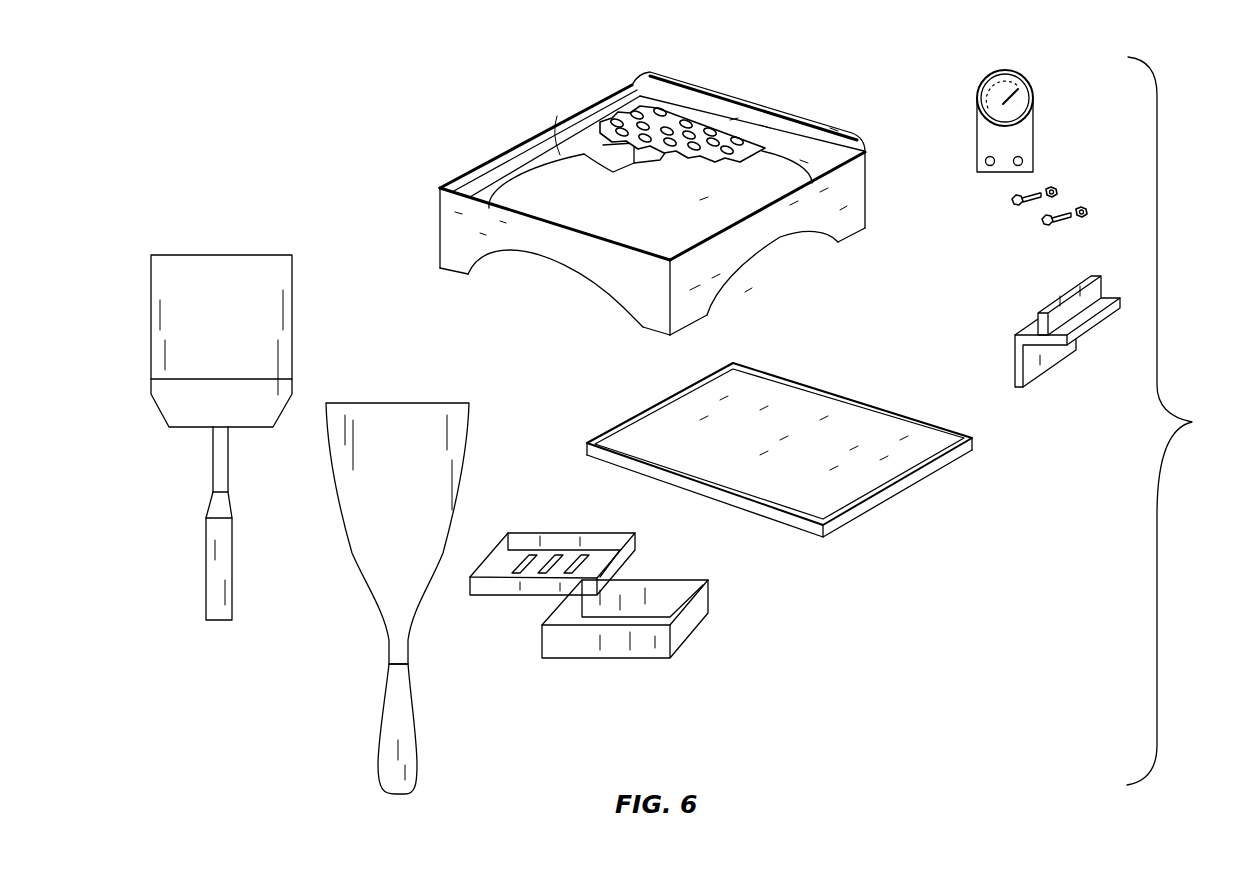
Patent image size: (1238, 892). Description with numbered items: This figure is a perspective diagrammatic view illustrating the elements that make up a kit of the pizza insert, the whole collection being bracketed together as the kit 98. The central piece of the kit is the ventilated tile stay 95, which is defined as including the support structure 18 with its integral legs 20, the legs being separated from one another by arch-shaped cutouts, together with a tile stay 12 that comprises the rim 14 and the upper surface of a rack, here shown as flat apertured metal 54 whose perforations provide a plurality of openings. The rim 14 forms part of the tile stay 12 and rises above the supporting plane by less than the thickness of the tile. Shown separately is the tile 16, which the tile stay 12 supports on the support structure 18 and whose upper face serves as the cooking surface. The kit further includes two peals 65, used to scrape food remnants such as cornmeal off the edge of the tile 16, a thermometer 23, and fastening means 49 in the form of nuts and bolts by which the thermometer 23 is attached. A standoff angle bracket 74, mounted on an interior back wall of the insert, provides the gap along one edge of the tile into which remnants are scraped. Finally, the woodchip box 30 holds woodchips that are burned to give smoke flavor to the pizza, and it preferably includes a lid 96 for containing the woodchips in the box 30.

The tile stay 12 is at (558, 134).
The rim 14 is at (750, 115).
The tile 16 is at (810, 400).
The support structure 18 is at (750, 247).
The legs 20 is at (855, 215).
The thermometer 23 is at (1033, 92).
The woodchip box 30 is at (705, 608).
The fastening means 49 is at (1088, 236).
The flat apertured metal 54 is at (677, 150).
The peal 65 is at (284, 286).
The standoff angle bracket 74 is at (1042, 367).
The ventilated tile stay 95 is at (578, 91).
The grease tray 96 is at (605, 543).
The kit 98 is at (1176, 421).